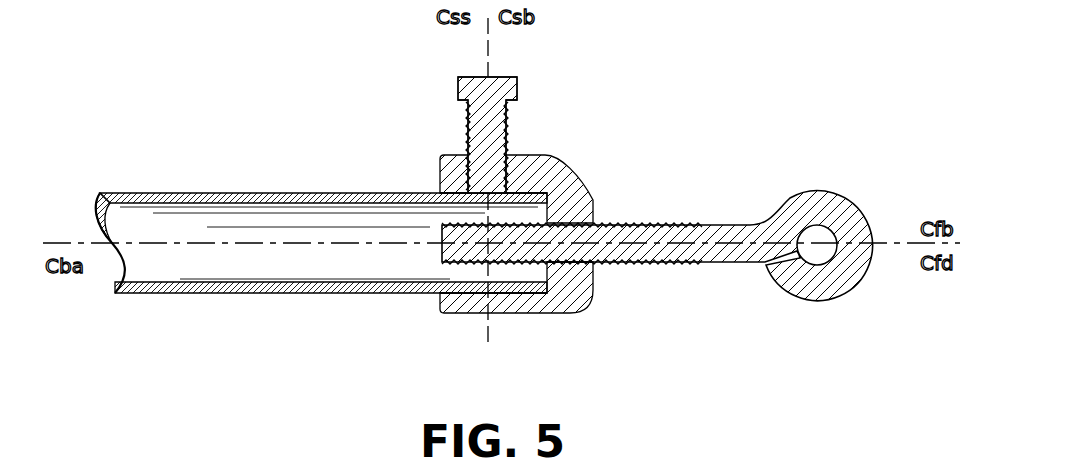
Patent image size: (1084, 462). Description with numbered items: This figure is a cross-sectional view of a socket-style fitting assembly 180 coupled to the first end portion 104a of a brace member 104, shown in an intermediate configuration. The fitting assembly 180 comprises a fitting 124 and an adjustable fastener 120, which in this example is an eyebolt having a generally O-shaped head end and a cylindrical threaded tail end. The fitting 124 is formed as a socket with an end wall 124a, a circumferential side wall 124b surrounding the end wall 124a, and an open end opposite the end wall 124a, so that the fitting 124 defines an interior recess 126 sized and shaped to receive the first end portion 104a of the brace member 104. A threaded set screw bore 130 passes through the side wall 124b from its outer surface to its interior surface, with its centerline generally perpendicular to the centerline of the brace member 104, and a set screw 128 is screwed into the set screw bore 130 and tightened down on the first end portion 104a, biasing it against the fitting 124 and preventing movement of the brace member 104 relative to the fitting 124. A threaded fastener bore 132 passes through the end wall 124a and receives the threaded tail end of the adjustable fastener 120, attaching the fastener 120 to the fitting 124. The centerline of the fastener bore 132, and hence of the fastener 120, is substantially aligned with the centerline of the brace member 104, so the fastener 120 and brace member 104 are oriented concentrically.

The brace member 104 is at (268, 191).
The first end portion of the brace member 104a is at (412, 192).
The adjustable fastener 120 is at (703, 273).
The fitting 124 is at (563, 286).
The end wall 124a is at (594, 205).
The circumferential side wall 124b is at (478, 314).
The interior recess 126 is at (442, 306).
The set screw 128 is at (516, 59).
The set screw bore 130 is at (512, 162).
The fastener bore 132 is at (578, 268).
The fitting assembly 180 is at (613, 164).